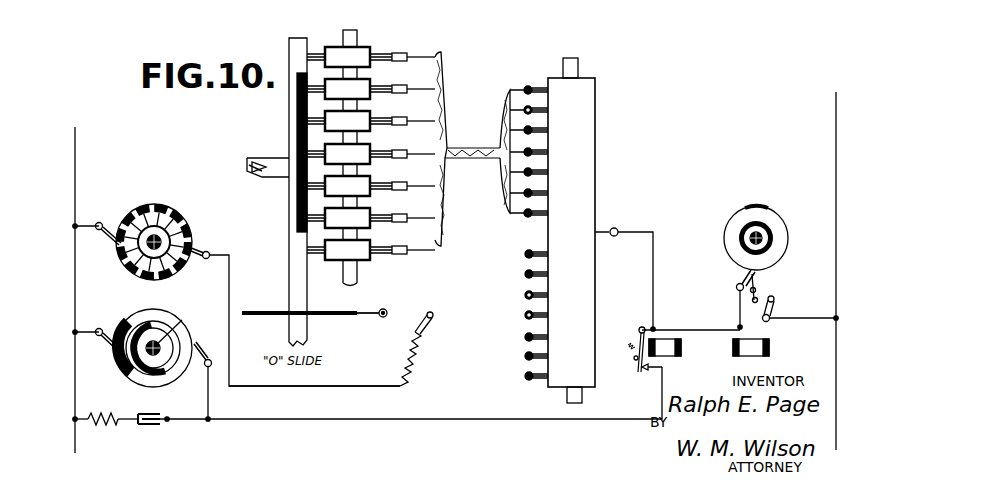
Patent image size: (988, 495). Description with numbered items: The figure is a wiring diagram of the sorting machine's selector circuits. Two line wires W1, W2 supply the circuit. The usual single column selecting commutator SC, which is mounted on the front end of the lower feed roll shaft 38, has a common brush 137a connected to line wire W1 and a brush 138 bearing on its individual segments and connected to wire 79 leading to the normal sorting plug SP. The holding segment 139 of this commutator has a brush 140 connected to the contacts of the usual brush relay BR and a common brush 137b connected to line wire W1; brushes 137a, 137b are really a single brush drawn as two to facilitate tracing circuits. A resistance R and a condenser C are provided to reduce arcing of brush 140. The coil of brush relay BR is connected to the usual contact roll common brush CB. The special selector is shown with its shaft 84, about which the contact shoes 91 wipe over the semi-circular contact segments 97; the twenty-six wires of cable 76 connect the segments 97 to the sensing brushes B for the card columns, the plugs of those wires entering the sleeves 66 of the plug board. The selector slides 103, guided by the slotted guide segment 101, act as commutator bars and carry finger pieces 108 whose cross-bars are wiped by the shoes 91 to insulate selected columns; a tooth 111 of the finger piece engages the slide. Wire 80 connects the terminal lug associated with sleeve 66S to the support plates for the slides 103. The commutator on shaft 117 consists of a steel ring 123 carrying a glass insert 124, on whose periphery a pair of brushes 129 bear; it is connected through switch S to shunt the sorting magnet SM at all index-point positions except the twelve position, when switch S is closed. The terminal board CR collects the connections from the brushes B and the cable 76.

The line wire W1 is at (75, 160).
The line wire W2 is at (836, 146).
The resistance R is at (105, 424).
The condenser C is at (146, 425).
The single column selecting commutator SC is at (168, 208).
The feed roll shaft 38 is at (148, 244).
The common brush 137a is at (99, 222).
The common brush 137b is at (106, 340).
The brush 138 is at (209, 250).
The holding segment 139 is at (146, 388).
The brush 140 is at (208, 358).
The selector slide 103 is at (290, 258).
The finger piece 108 is at (270, 157).
The pawl tooth 111 is at (252, 163).
The guide segment 101 is at (262, 311).
The shaft 84 is at (345, 34).
The contact shoe 91 is at (381, 50).
The contact segment 97 is at (406, 53).
The cable 76 is at (470, 150).
The control relay / terminal board CR is at (597, 110).
The brush B is at (533, 378).
The sleeve 66 is at (524, 293).
The sleeve 66S is at (383, 309).
The wire 80 is at (363, 316).
The normal sorting plug SP is at (425, 313).
The wire 79 is at (366, 388).
The contact roll common brush CB is at (610, 230).
The brush relay BR is at (660, 338).
The sorting magnet SM is at (752, 342).
The switch S is at (776, 303).
The brush 129 is at (742, 279).
The steel ring 123 is at (726, 244).
The glass insert 124 is at (762, 206).
The shaft 117 is at (749, 233).